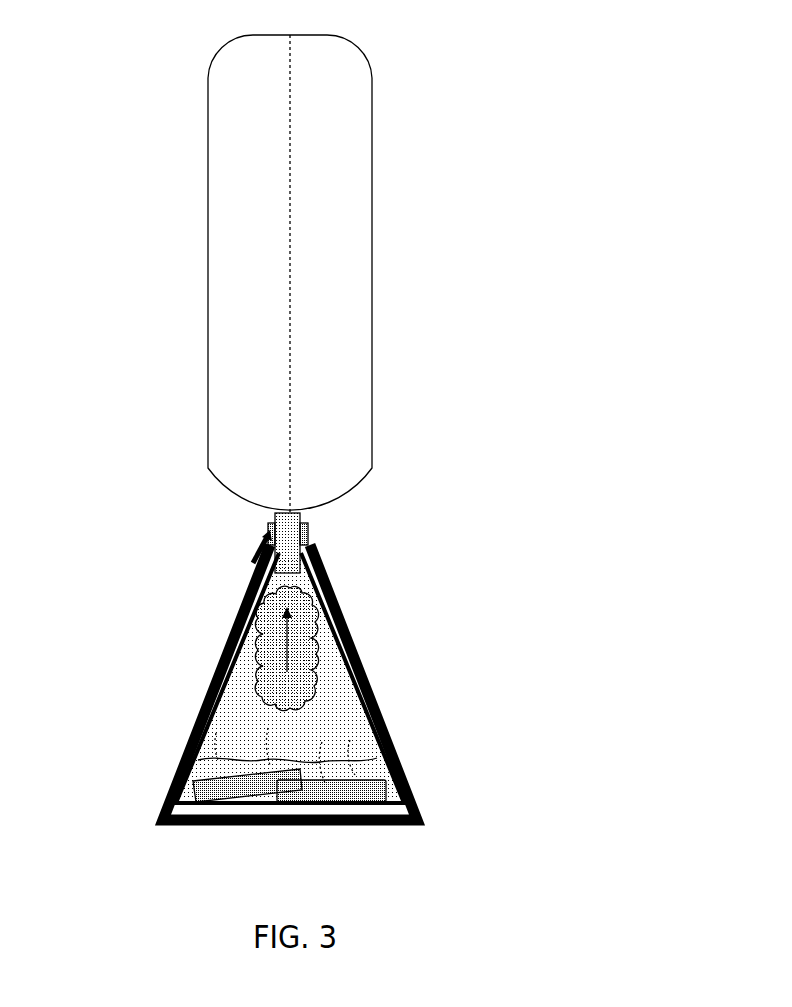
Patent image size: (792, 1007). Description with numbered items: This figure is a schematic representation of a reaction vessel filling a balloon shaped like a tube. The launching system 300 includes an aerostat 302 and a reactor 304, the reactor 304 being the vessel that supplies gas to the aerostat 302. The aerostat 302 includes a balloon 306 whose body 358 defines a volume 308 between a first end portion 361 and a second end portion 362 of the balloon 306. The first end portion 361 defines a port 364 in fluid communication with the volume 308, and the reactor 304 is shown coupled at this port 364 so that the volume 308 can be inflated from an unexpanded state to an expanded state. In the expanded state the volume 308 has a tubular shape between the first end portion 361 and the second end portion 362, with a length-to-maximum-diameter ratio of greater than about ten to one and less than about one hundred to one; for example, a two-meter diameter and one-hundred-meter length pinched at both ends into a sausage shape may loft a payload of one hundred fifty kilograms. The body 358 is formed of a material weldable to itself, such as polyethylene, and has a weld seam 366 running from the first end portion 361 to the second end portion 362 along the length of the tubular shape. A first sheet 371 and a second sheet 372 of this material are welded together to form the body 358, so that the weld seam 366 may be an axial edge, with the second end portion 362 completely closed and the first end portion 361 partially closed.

The launching system 300 is at (668, 42).
The aerostat 302 is at (537, 37).
The reactor 304 is at (389, 719).
The balloon 306 is at (193, 205).
The volume 308 is at (345, 281).
The body 358 is at (207, 290).
The first end portion 361 is at (338, 498).
The second end portion 362 is at (231, 52).
The port 364 is at (273, 512).
The weld seam 366 is at (290, 124).
The first sheet 371 is at (222, 405).
The second sheet 372 is at (338, 392).